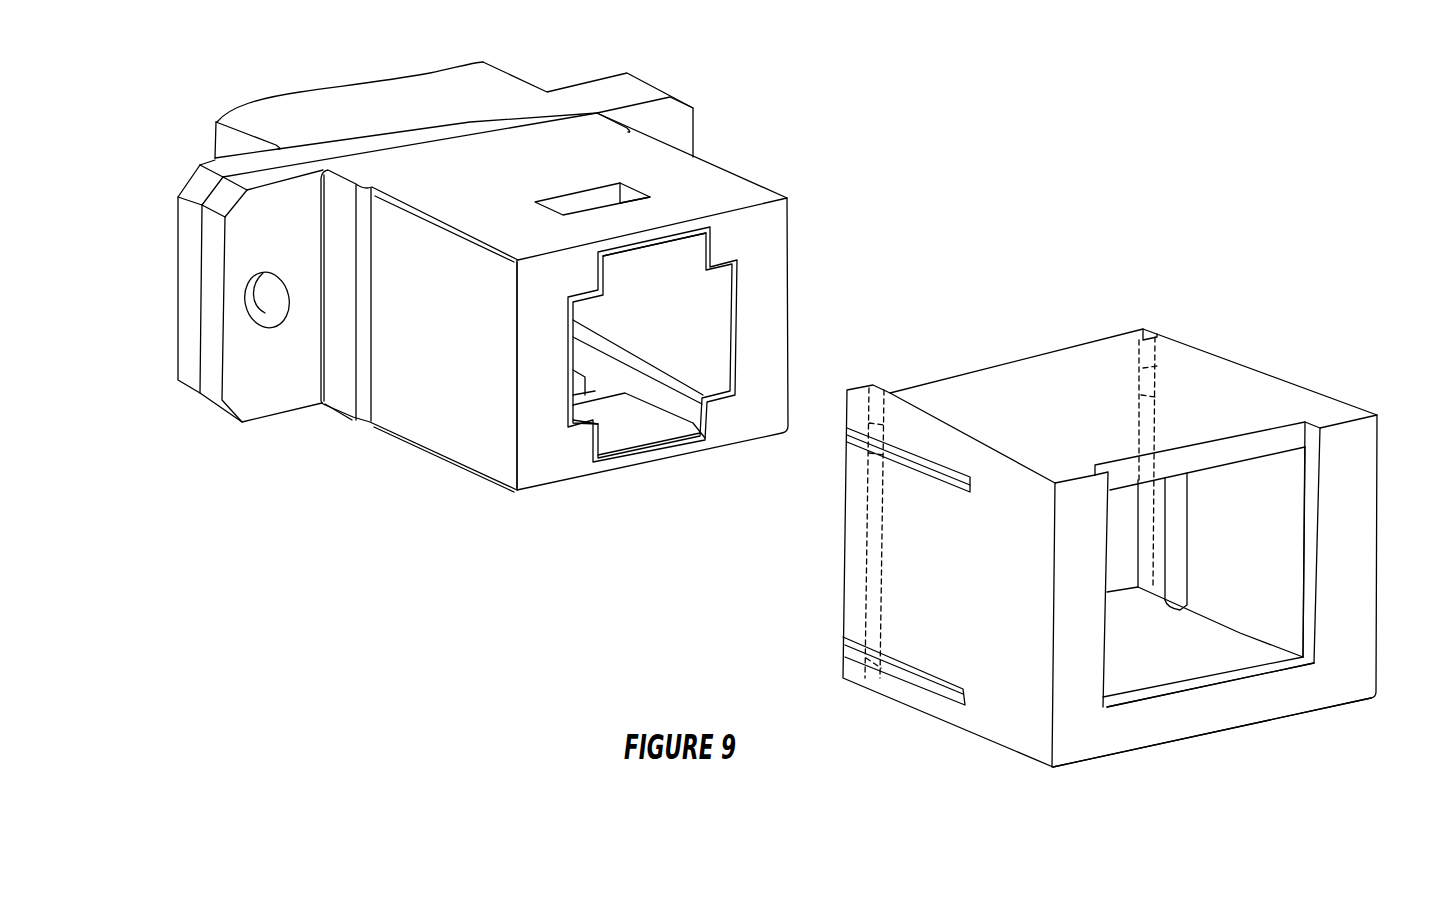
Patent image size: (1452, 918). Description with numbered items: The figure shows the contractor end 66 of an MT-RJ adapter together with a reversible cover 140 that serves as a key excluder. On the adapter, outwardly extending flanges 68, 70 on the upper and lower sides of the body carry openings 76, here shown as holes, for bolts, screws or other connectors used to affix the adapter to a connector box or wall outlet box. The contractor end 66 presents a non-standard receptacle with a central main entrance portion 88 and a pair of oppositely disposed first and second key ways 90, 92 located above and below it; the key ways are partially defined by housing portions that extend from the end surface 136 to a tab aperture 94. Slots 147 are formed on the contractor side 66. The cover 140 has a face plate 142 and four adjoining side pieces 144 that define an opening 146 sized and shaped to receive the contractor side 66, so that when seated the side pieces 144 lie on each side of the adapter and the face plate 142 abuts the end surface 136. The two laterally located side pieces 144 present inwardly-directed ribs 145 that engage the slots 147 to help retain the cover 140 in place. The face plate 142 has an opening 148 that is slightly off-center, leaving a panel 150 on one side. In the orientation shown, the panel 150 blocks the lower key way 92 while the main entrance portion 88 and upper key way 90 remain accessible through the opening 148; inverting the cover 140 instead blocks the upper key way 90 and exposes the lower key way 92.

The contractor end 66 is at (840, 160).
The flange 68 is at (683, 104).
The flange 70 is at (245, 383).
The opening 76 is at (245, 318).
The main entrance portion 88 is at (703, 320).
The first key way 90 is at (698, 250).
The second key way 92 is at (607, 432).
The first tab aperture 94 is at (640, 188).
The end surface 136 is at (550, 285).
The reversible cover 140 is at (1312, 330).
The face plate 142 is at (1077, 715).
The side pieces 144 is at (958, 677).
The ribs 145 is at (870, 452).
The opening 146 is at (1137, 414).
The slots 147 is at (672, 104).
The opening 148 is at (1265, 540).
The panel 150 is at (1243, 708).